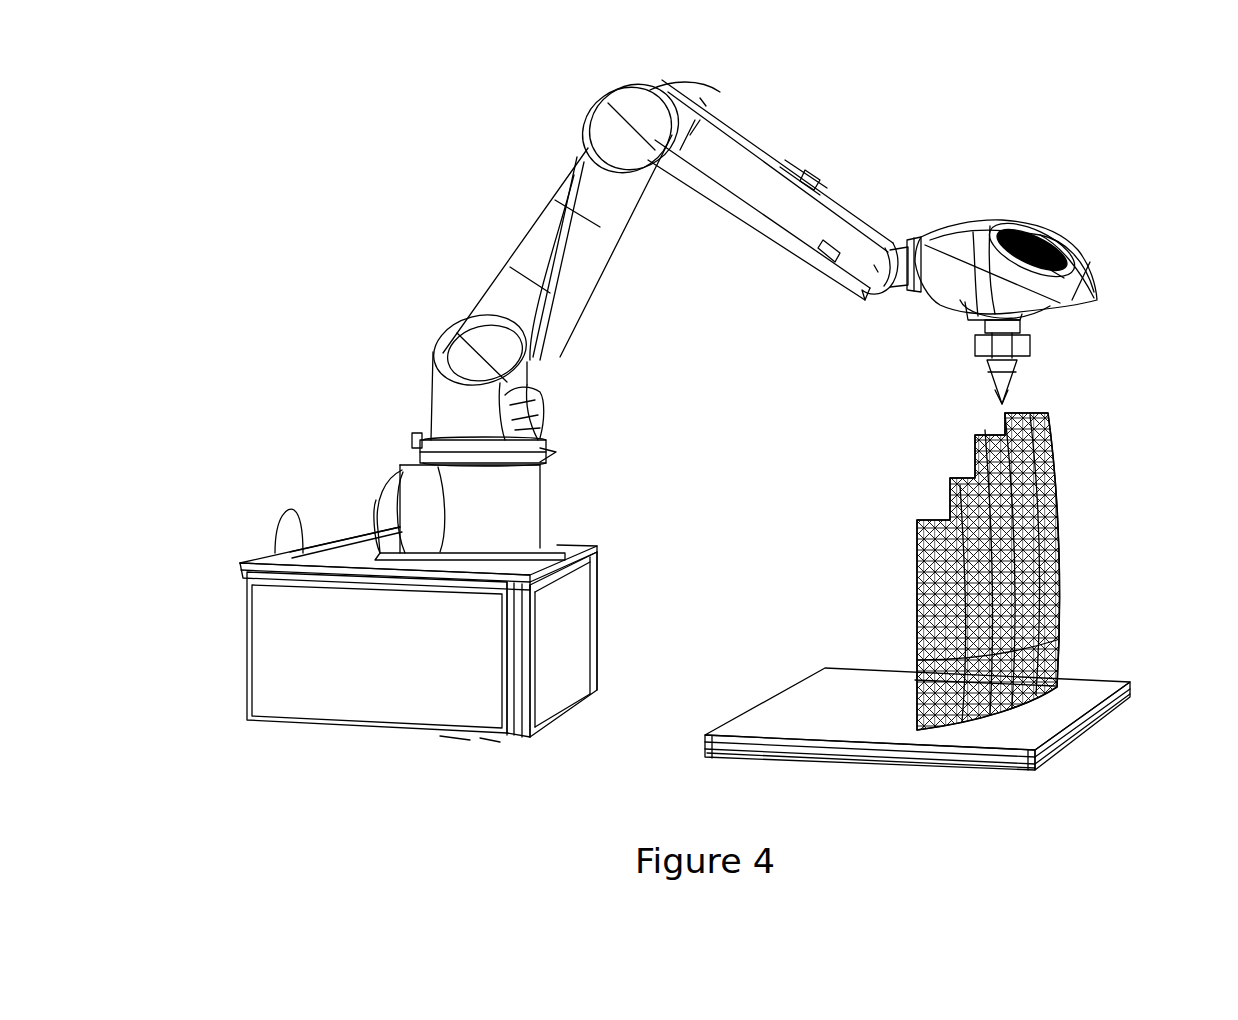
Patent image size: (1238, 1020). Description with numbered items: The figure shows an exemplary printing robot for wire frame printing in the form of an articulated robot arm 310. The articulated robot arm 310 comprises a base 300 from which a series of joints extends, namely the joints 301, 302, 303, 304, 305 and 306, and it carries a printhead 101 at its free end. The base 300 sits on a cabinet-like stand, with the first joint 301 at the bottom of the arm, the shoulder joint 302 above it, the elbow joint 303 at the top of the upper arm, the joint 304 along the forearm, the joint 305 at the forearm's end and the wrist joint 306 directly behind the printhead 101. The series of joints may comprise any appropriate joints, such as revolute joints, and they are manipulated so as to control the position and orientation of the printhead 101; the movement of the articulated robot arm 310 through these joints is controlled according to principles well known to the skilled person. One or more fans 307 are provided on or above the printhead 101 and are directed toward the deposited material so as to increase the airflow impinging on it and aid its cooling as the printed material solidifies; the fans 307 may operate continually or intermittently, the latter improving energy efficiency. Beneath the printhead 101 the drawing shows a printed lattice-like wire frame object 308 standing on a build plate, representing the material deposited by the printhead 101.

The articulated robot arm 310 is at (372, 157).
The base 300 is at (245, 642).
The joint 301 is at (543, 452).
The joint 302 is at (440, 343).
The joint 303 is at (605, 101).
The joint 304 is at (718, 120).
The joint 305 is at (862, 284).
The joint 306 is at (912, 240).
The fan 307 is at (1055, 240).
The printhead 101 is at (1013, 383).
The printed lattice object 308 is at (1062, 570).